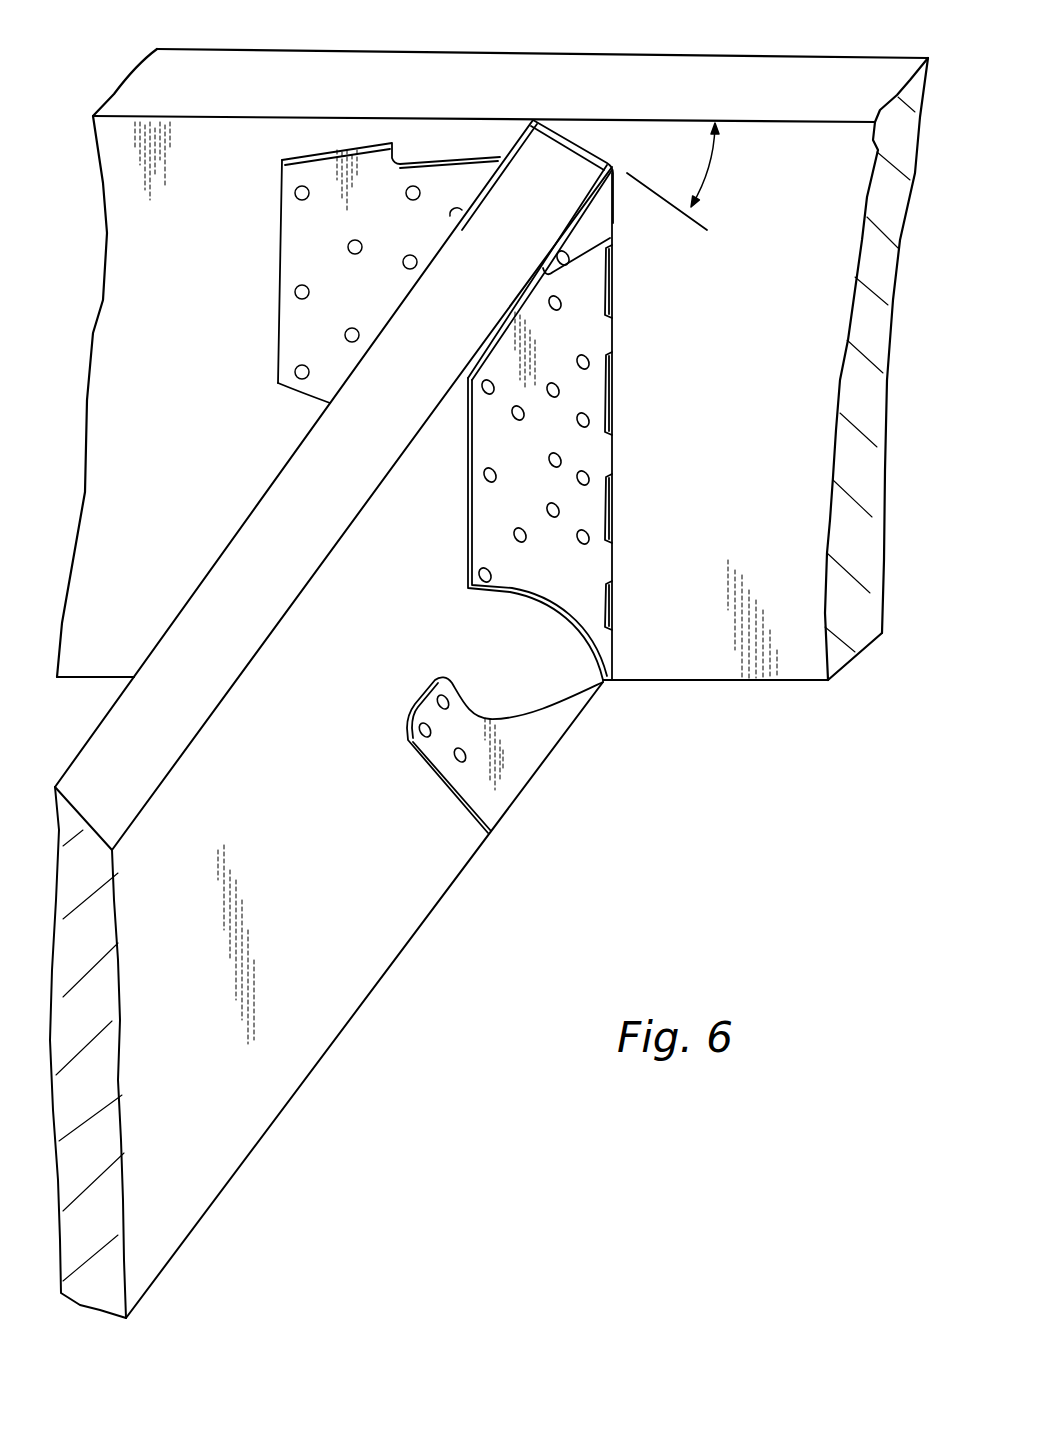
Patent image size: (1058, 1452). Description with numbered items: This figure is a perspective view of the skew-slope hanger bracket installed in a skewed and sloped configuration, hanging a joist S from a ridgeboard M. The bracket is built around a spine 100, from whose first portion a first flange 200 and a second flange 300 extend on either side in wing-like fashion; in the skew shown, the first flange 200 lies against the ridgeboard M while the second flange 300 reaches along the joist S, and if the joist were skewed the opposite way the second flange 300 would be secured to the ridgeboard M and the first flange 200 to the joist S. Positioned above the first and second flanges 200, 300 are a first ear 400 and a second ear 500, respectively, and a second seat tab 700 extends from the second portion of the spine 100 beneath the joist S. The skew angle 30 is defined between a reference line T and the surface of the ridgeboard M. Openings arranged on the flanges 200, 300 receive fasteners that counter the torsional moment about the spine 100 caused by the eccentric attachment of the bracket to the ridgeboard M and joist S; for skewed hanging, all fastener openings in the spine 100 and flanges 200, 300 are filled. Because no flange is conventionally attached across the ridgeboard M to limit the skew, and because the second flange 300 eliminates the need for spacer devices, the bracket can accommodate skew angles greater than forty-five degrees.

The ridgeboard M is at (623, 65).
The joist S is at (262, 522).
The reference line T is at (707, 231).
The skew angle 30 is at (713, 166).
The spine 100 is at (588, 148).
The first flange 200 is at (293, 178).
The second flange 300 is at (595, 338).
The first ear 400 is at (513, 137).
The second ear 500 is at (603, 223).
The second seat tab 700 is at (500, 792).